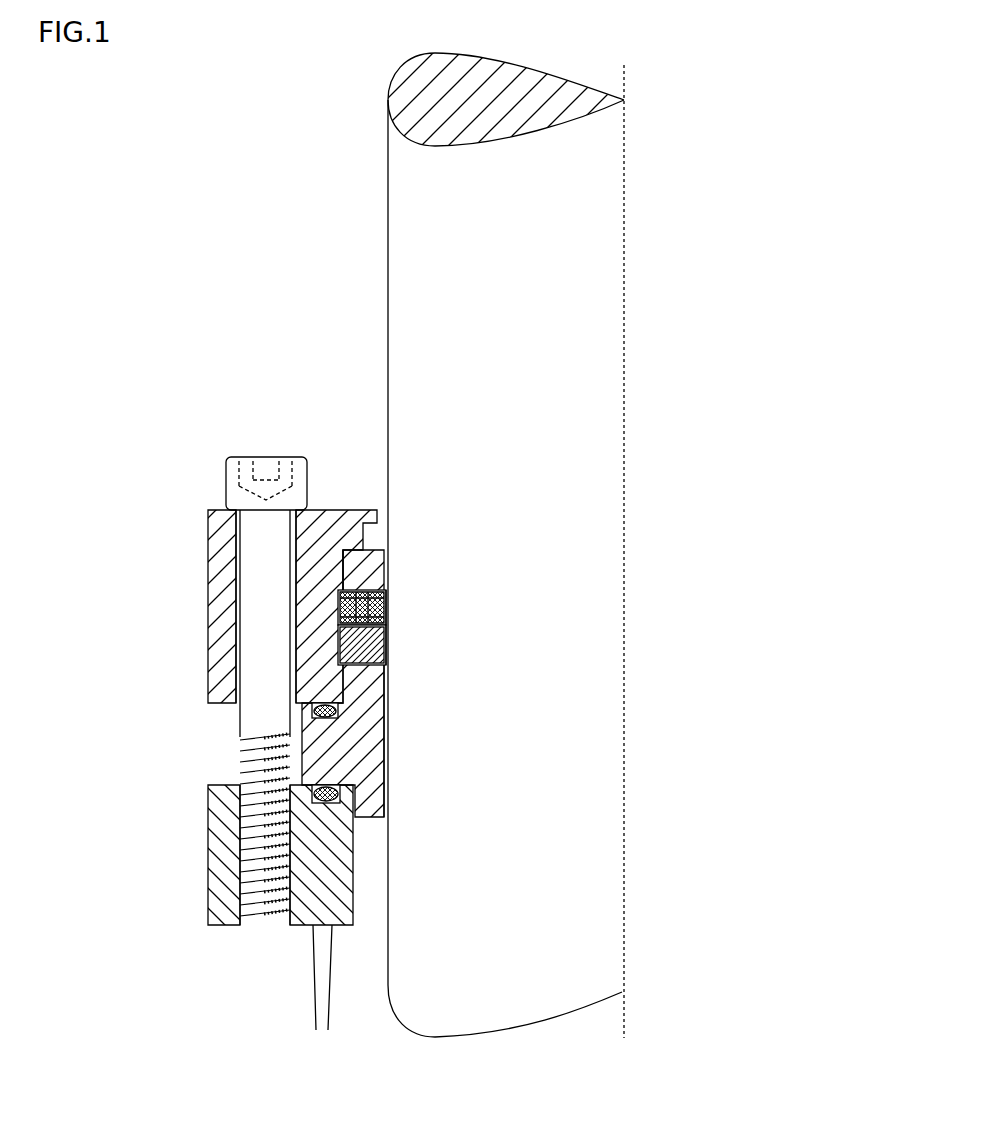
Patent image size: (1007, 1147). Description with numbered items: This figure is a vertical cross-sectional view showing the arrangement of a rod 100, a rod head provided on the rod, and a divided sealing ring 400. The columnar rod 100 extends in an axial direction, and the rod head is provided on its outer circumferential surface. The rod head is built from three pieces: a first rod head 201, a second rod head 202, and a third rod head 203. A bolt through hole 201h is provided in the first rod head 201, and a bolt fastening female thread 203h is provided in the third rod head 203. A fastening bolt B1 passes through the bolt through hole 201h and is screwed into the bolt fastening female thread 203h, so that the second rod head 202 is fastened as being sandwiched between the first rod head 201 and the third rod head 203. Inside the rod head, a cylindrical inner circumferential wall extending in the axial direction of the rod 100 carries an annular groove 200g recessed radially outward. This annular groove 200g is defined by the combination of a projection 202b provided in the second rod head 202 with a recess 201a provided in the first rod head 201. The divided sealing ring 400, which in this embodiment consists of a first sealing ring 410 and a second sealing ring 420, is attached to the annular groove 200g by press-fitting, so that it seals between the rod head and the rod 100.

The rod 100 is at (598, 175).
The fastening bolt B1 is at (228, 492).
The first rod head 201 is at (226, 600).
The bolt through hole 201h is at (236, 568).
The recess 201a is at (343, 550).
The second rod head 202 is at (330, 745).
The projection 202b is at (388, 688).
The third rod head 203 is at (228, 876).
The bolt fastening female thread 203h is at (240, 905).
The annular groove 200g is at (388, 572).
The divided sealing ring 400 is at (392, 717).
The first sealing ring 410 is at (388, 607).
The second sealing ring 420 is at (388, 643).